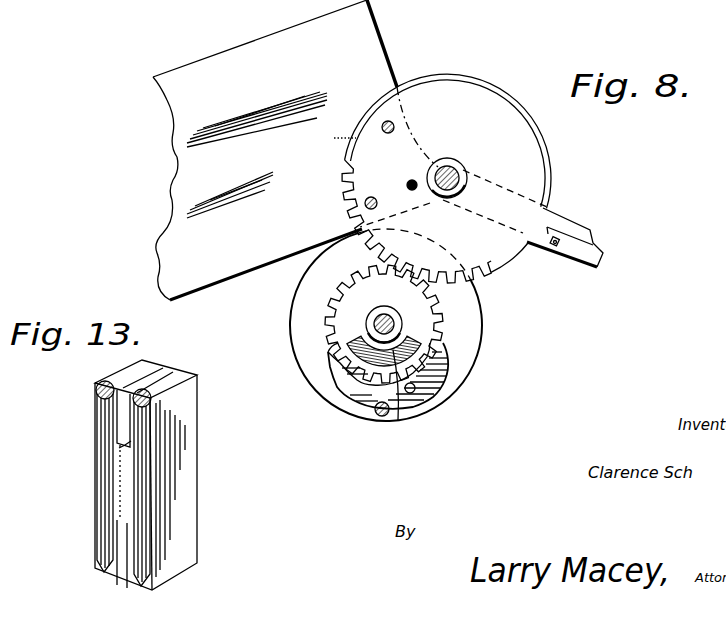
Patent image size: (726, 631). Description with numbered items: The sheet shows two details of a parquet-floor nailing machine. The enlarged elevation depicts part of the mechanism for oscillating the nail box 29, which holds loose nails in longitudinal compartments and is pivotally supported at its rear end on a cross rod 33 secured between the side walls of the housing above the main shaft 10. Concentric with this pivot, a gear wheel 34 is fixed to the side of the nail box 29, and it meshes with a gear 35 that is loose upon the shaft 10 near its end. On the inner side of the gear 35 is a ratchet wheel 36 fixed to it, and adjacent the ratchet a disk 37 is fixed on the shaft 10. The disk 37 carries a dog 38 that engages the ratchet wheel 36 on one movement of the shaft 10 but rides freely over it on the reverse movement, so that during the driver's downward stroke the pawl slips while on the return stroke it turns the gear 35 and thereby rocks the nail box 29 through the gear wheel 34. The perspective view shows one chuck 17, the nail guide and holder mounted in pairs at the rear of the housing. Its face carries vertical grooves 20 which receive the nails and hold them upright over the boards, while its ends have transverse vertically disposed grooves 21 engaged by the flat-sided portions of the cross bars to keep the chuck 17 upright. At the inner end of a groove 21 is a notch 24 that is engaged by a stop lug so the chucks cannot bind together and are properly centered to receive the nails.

In FIG. 8, the nail box 29 is at (275, 150).
In FIG. 8, the cross rod 33 is at (455, 169).
In FIG. 8, the gear wheel 34 is at (352, 163).
In FIG. 8, the gear 35 is at (337, 305).
In FIG. 8, the main shaft 10 is at (398, 324).
In FIG. 8, the disk 37 is at (472, 369).
In FIG. 8, the dog 38 is at (352, 395).
In FIG. 8, the ratchet wheel 36 is at (415, 405).
In FIG. 13, the chuck 17 is at (161, 475).
In FIG. 13, the vertical groove 20 is at (105, 497).
In FIG. 13, the transverse groove 21 is at (163, 369).
In FIG. 13, the notch 24 is at (134, 443).